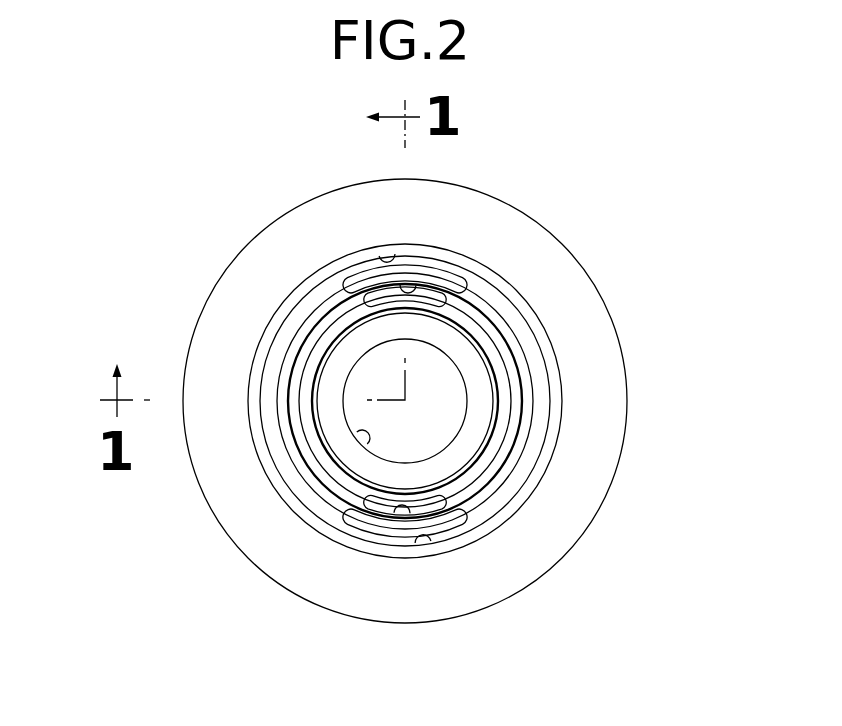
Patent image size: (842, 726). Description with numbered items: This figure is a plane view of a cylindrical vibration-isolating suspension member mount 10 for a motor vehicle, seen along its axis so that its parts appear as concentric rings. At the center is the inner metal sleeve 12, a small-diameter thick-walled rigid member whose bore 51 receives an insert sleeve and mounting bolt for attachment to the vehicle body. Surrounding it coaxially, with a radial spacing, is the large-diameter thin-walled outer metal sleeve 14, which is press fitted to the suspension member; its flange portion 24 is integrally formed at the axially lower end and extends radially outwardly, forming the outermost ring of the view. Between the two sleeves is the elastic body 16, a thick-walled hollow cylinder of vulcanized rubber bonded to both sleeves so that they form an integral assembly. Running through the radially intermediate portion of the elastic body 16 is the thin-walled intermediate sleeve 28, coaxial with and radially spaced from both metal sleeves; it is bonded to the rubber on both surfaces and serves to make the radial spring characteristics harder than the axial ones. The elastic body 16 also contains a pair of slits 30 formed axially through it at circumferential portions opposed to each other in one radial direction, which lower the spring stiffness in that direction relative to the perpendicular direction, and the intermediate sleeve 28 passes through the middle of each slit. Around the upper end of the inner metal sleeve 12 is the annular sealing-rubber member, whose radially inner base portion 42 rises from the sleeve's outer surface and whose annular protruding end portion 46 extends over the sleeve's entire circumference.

The suspension member mount 10 is at (568, 172).
The inner metal sleeve 12 is at (405, 477).
The outer metal sleeve 14 is at (555, 428).
The elastic body 16 is at (278, 454).
The flange portion 24 is at (225, 307).
The intermediate sleeve 28 is at (518, 331).
The slits 30 is at (383, 250).
The radially inner base portion 42 is at (455, 325).
The annular protruding end portion 46 is at (338, 327).
The bore 51 is at (362, 440).